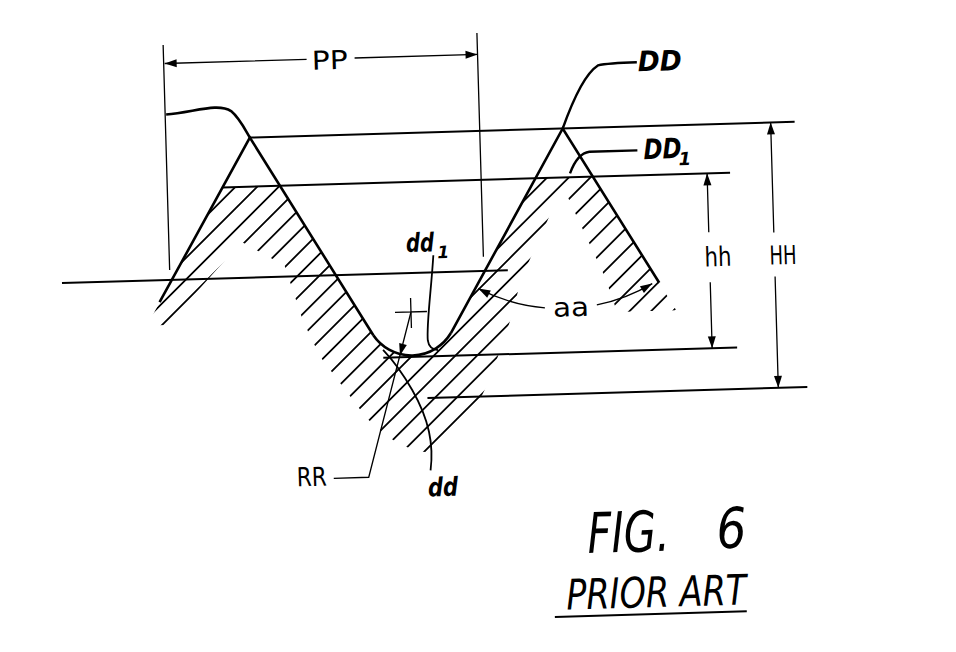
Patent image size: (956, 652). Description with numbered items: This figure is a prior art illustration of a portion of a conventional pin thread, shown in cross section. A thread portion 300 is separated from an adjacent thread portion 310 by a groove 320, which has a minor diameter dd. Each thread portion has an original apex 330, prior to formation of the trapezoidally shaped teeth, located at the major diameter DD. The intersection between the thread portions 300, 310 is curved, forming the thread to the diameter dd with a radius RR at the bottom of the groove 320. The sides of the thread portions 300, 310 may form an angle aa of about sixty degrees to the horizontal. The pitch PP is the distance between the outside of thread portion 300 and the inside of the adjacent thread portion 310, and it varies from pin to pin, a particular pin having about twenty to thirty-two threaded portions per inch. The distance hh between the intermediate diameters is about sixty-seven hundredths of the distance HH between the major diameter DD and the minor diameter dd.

The thread portion 300 is at (213, 309).
The thread portion 310 is at (552, 265).
The groove 320 is at (437, 351).
The original apex 330 is at (172, 108).